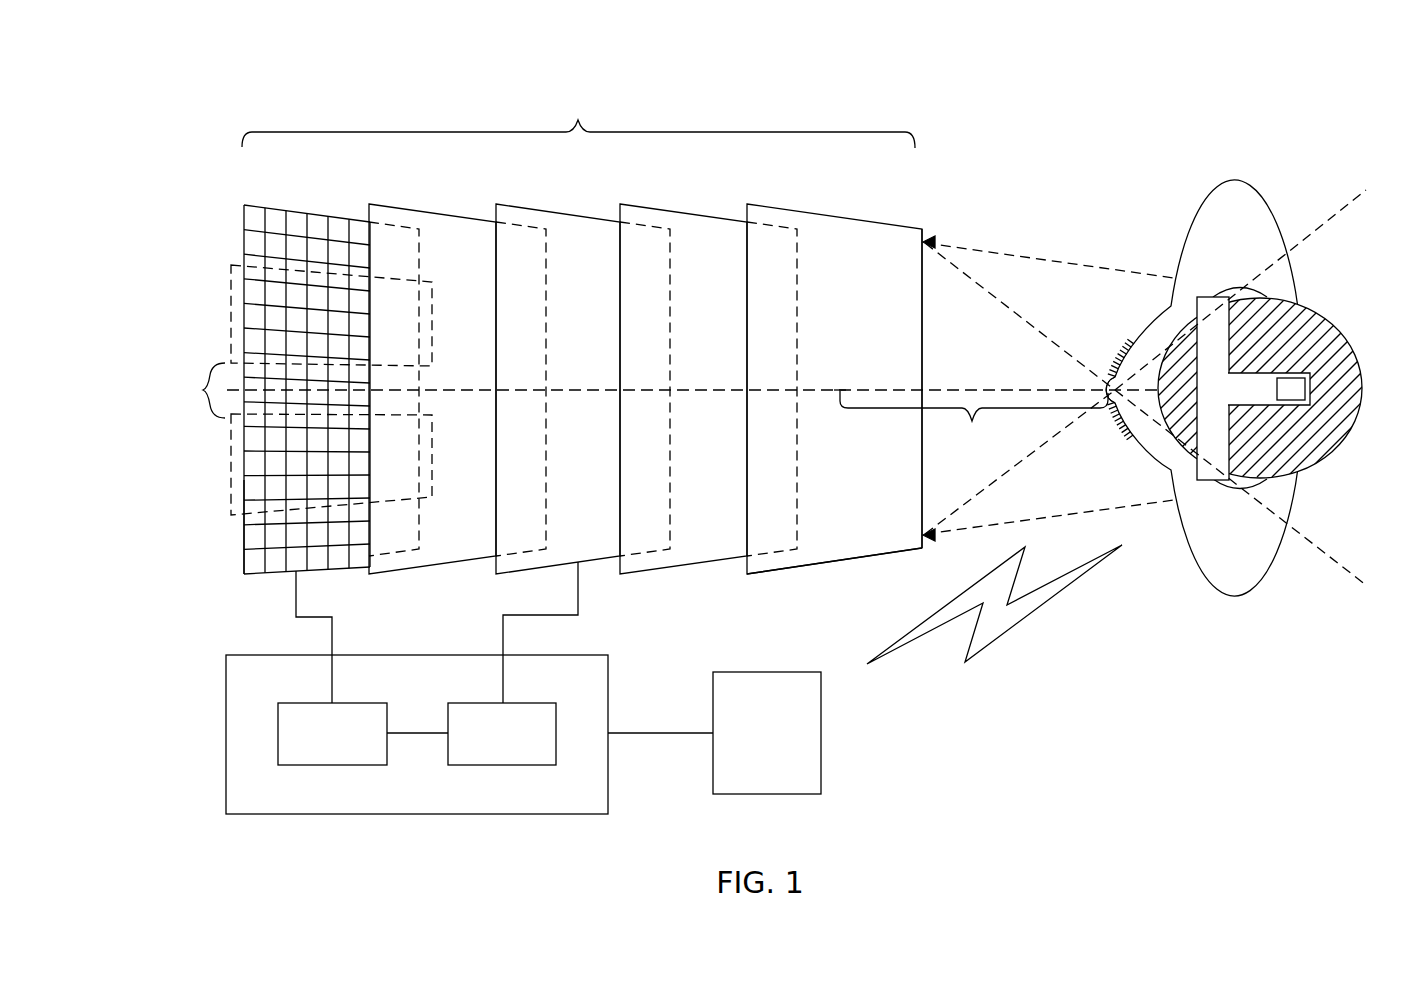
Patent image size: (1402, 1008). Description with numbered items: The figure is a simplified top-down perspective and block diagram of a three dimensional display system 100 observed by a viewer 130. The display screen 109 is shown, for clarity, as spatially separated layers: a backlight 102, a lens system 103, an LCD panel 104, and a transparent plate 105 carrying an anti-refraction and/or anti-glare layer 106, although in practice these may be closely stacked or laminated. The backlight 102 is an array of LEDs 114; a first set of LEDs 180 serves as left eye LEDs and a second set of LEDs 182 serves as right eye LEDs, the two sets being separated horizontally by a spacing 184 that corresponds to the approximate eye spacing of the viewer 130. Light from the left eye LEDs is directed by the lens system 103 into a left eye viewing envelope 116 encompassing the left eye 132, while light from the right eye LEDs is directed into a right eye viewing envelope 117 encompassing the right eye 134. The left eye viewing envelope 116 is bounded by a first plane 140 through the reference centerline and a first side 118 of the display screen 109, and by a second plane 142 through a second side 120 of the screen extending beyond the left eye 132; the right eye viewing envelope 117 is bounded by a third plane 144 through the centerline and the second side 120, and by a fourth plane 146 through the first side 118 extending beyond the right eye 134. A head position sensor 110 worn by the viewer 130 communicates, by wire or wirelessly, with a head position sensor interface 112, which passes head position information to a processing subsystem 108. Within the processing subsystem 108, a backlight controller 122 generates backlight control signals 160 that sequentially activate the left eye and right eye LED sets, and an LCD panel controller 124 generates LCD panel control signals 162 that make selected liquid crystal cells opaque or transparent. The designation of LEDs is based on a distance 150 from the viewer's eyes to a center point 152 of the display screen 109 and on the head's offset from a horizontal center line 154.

The three dimensional (3D) display system 100 is at (1042, 672).
The backlight 102 is at (320, 213).
The lens system 103 is at (446, 213).
The liquid crystal display (LCD) panel 104 is at (571, 213).
The transparent plate 105 is at (698, 213).
The anti-refraction and/or anti-glare layer 106 is at (823, 213).
The processing subsystem 108 is at (609, 671).
The display screen 109 is at (578, 120).
The head position sensor 110 is at (1300, 380).
The head position sensor interface 112 is at (762, 671).
The light emitting diodes (LEDs) 114 is at (250, 537).
The left eye viewing envelope 116 is at (1030, 500).
The right eye viewing envelope 117 is at (1030, 306).
The first side of display screen 118 is at (882, 224).
The second side of display screen 120 is at (834, 562).
The backlight controller 122 is at (343, 765).
The LCD panel controller 124 is at (492, 765).
The viewer 130 is at (1317, 313).
The left eye 132 is at (1124, 432).
The right eye 134 is at (1124, 344).
The first plane 140 is at (1317, 530).
The second plane 142 is at (957, 531).
The third plane 144 is at (1337, 222).
The fourth plane 146 is at (1085, 259).
The distance 150 is at (974, 420).
The center point 152 is at (841, 391).
The center line 154 is at (592, 390).
The backlight control signals 160 is at (336, 627).
The LCD panel control signals 162 is at (499, 627).
The first set of LEDs (left eye LEDs) 180 is at (230, 300).
The second set of LEDs (right eye LEDs) 182 is at (232, 468).
The spacing 184 is at (189, 390).